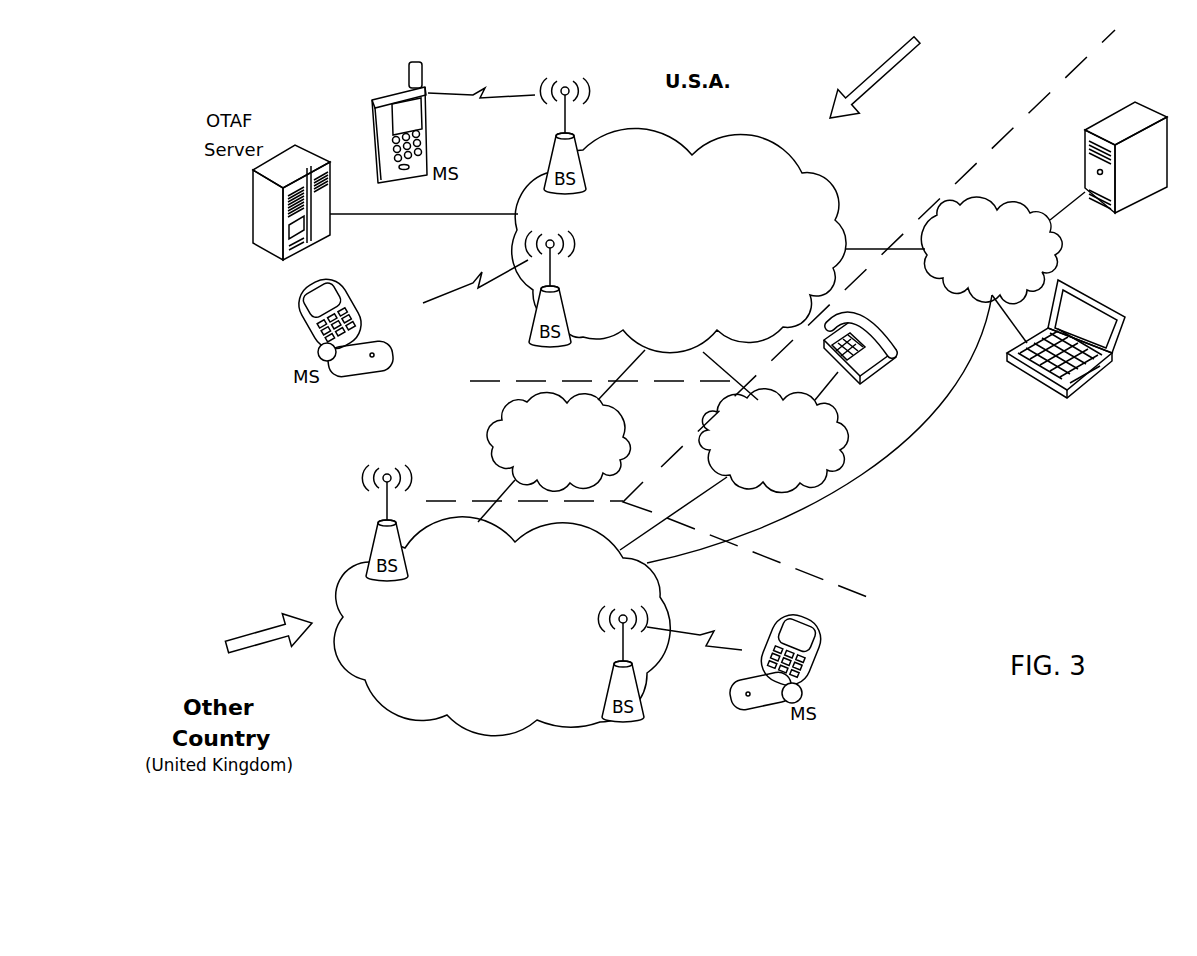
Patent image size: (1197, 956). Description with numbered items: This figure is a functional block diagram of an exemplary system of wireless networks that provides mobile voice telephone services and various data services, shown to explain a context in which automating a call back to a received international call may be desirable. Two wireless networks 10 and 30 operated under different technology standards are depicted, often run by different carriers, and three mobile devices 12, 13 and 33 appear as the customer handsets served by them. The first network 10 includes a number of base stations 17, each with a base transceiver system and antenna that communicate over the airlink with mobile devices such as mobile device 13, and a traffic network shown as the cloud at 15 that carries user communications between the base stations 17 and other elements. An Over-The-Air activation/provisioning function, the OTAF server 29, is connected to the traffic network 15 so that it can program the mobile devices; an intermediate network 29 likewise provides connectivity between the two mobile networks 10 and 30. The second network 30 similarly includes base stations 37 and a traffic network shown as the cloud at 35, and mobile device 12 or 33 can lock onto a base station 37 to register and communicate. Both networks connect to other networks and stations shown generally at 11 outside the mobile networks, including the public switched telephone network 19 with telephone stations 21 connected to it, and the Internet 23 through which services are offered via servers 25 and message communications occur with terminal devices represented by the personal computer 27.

The wireless network 10 is at (882, 66).
The other networks and stations 11 is at (925, 524).
The mobile device 12 is at (352, 311).
The mobile device 13 is at (368, 106).
The traffic network 15 is at (845, 200).
The base station 17 is at (550, 152).
The public switched telephone network 19 is at (842, 425).
The telephone station 21 is at (880, 358).
The Internet 23 is at (1057, 262).
The server 25 is at (1085, 172).
The personal computer 27 is at (1028, 383).
The intermediate network / OTAF server 29 is at (628, 448).
The wireless network 30 is at (249, 636).
The mobile device 33 is at (825, 645).
The traffic network 35 is at (665, 588).
The base station 37 is at (370, 534).